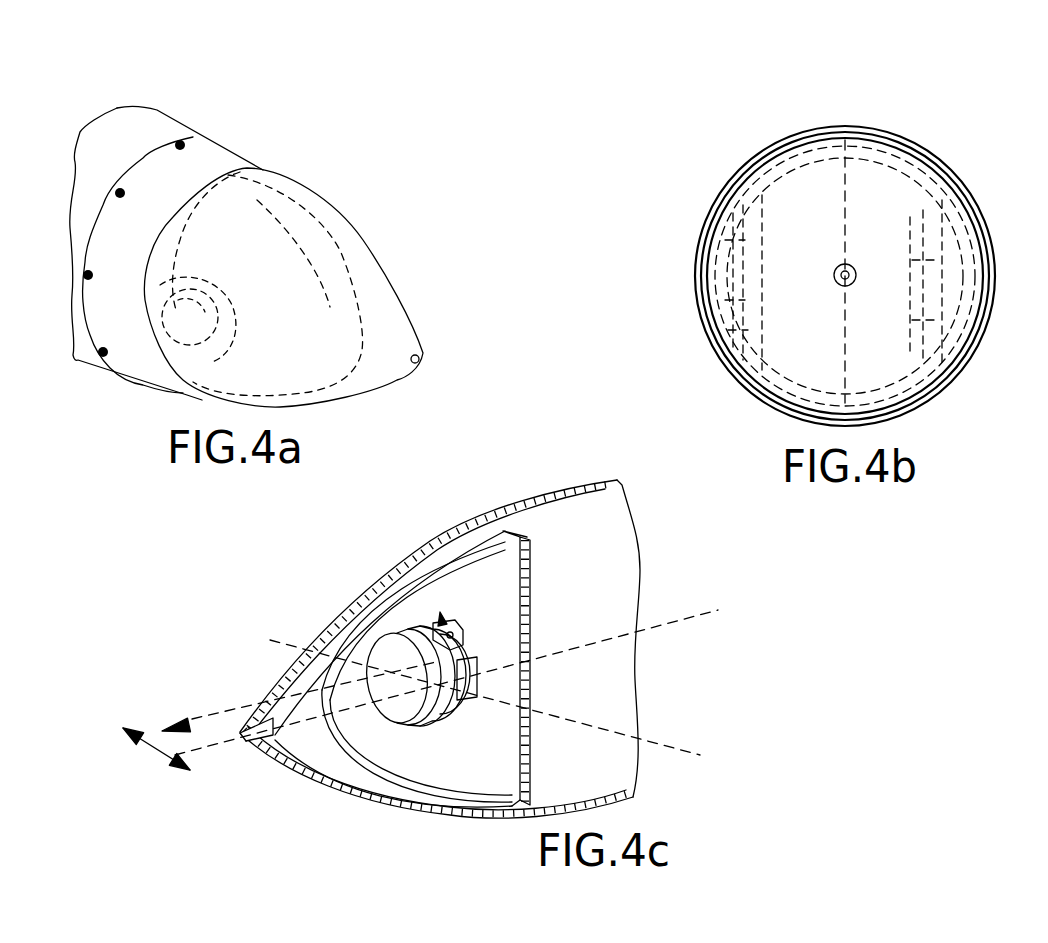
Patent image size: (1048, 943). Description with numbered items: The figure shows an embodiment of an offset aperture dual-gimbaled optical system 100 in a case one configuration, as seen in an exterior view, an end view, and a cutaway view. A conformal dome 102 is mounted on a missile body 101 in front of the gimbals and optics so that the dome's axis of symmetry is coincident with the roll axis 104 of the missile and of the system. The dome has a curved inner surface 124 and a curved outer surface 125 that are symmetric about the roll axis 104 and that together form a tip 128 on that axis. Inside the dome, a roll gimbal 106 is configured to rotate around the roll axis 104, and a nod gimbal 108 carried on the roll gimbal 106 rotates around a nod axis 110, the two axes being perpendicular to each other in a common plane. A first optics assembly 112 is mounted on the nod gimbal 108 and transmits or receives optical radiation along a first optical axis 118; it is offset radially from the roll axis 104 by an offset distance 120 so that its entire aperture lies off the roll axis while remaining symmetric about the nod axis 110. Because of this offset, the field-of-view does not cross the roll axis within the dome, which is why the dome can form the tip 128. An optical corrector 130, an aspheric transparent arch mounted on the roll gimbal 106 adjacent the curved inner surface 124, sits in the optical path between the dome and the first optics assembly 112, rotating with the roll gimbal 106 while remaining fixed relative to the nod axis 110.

In FIG. 4A, the offset aperture dual-gimbaled optical system 100 is at (290, 256).
In FIG. 4A, the missile body 101 is at (167, 132).
In FIG. 4A, the conformal dome 102 is at (403, 297).
In FIG. 4C, the roll axis 104 is at (680, 620).
In FIG. 4B, the roll gimbal 106 is at (882, 205).
In FIG. 4C, the roll gimbal 106 is at (473, 593).
In FIG. 4A, the nod gimbal 108 is at (180, 337).
In FIG. 4B, the nod gimbal 108 is at (730, 280).
In FIG. 4C, the nod gimbal 108 is at (443, 658).
In FIG. 4C, the nod axis 110 is at (737, 750).
In FIG. 4C, the first optics assembly 112 is at (390, 657).
In FIG. 4C, the first optical axis 118 is at (207, 723).
In FIG. 4C, the offset distance 120 is at (160, 752).
In FIG. 4C, the curved inner surface 124 is at (334, 777).
In FIG. 4C, the curved outer surface 125 is at (310, 775).
In FIG. 4A, the tip 128 is at (423, 357).
In FIG. 4A, the optical corrector 130 is at (313, 367).
In FIG. 4B, the optical corrector 130 is at (777, 352).
In FIG. 4C, the optical corrector 130 is at (427, 778).